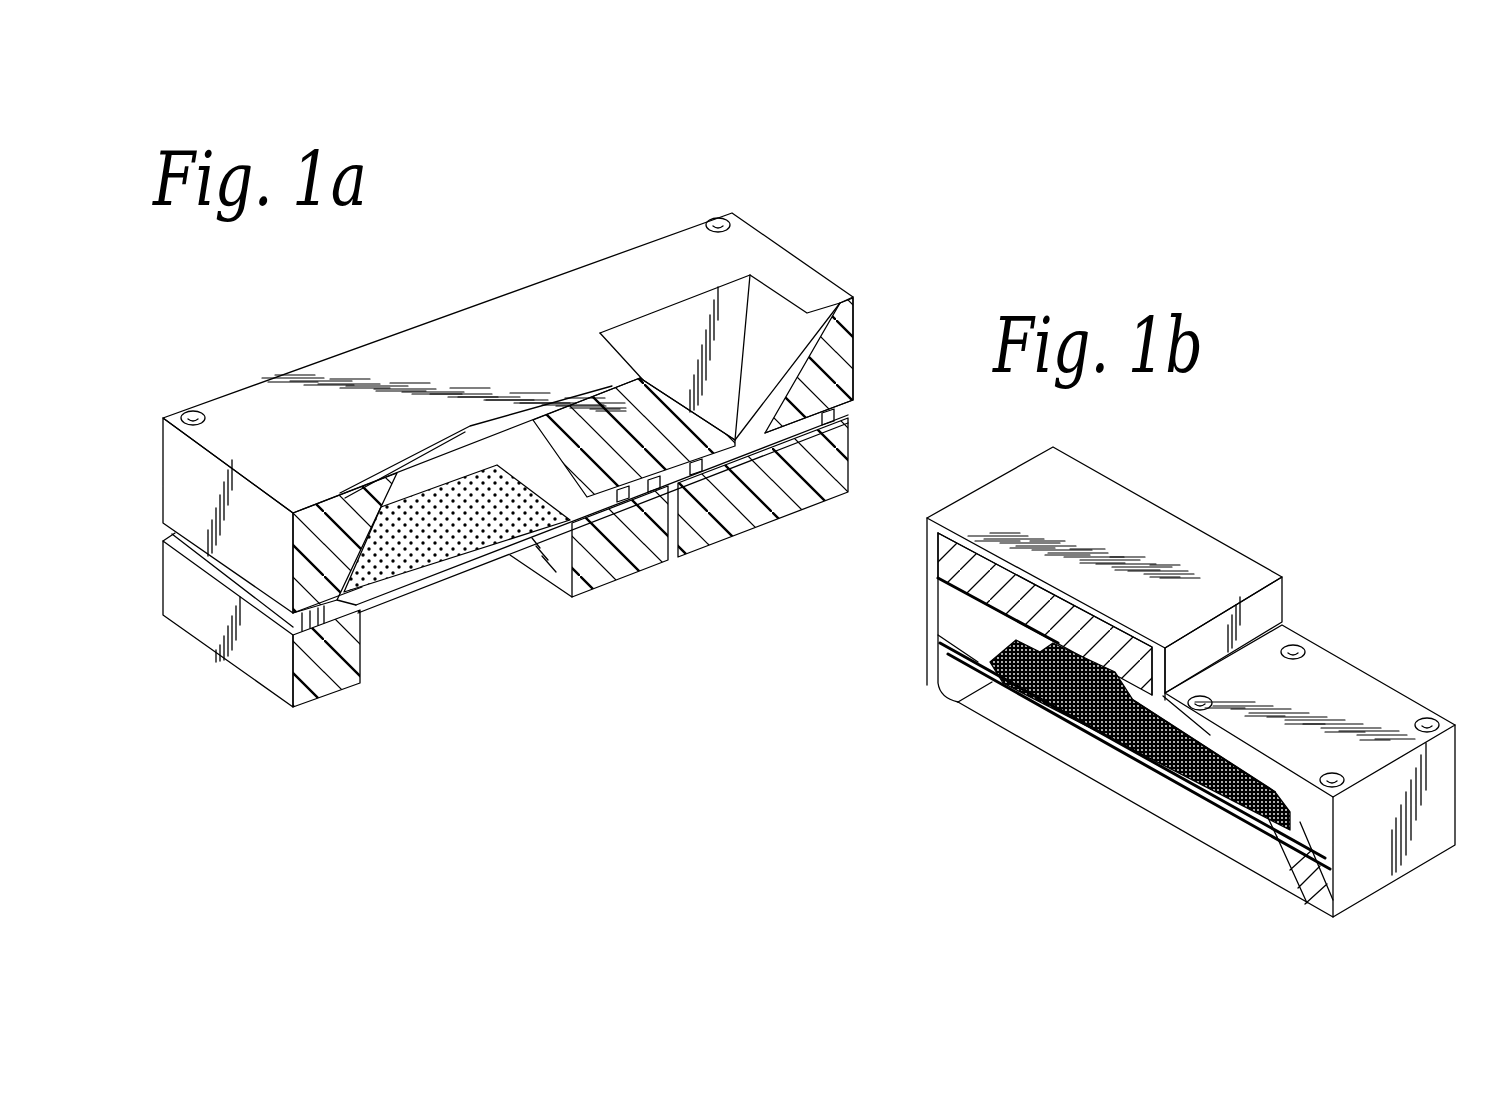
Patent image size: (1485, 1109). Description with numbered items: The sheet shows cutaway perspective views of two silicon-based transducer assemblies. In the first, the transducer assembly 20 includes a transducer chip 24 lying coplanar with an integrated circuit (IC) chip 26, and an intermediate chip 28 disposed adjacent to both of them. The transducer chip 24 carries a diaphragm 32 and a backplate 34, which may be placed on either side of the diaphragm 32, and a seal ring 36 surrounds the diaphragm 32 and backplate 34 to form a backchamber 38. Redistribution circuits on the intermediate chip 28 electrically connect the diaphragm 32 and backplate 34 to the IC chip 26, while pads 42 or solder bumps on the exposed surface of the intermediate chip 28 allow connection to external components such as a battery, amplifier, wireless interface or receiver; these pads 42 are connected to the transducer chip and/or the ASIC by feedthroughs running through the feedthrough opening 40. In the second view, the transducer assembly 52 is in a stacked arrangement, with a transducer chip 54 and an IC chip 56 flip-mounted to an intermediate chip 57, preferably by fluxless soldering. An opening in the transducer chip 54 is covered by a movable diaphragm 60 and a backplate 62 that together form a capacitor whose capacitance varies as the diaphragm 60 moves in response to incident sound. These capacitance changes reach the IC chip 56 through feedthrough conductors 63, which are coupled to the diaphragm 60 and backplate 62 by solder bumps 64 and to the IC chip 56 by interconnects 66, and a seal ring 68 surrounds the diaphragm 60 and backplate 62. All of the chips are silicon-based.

In FIG. 1A, the silicon-based transducer assembly 20 is at (514, 474).
In FIG. 1A, the transducer chip 24 is at (272, 680).
In FIG. 1A, the integrated circuit (IC) chip 26 is at (830, 473).
In FIG. 1A, the intermediate chip 28 is at (510, 310).
In FIG. 1A, the diaphragm 32 is at (443, 543).
In FIG. 1A, the backplate 34 is at (470, 567).
In FIG. 1A, the seal ring 36 is at (700, 535).
In FIG. 1A, the backchamber 38 is at (452, 452).
In FIG. 1A, the feedthrough opening 40 is at (733, 305).
In FIG. 1A, the pads 42 is at (191, 410).
In FIG. 1B, the silicon-based transducer assembly 52 is at (1145, 682).
In FIG. 1B, the transducer chip 54 is at (1315, 882).
In FIG. 1B, the IC chip 56 is at (1077, 620).
In FIG. 1B, the intermediate chip 57 is at (1308, 806).
In FIG. 1B, the movable diaphragm 60 is at (1125, 748).
In FIG. 1B, the backplate 62 is at (1200, 737).
In FIG. 1B, the feedthrough conductors 63 is at (1003, 683).
In FIG. 1B, the solder bumps 64 is at (935, 700).
In FIG. 1B, the interconnects 66 is at (938, 592).
In FIG. 1B, the seal ring 68 is at (938, 640).